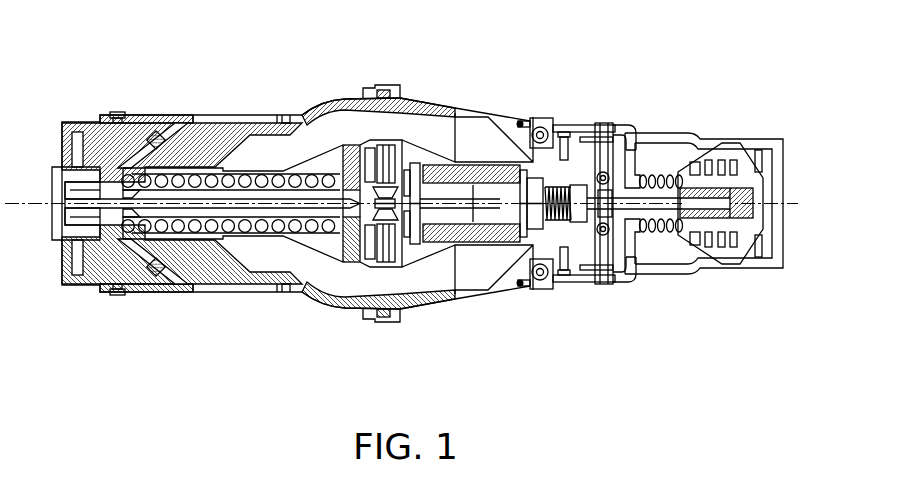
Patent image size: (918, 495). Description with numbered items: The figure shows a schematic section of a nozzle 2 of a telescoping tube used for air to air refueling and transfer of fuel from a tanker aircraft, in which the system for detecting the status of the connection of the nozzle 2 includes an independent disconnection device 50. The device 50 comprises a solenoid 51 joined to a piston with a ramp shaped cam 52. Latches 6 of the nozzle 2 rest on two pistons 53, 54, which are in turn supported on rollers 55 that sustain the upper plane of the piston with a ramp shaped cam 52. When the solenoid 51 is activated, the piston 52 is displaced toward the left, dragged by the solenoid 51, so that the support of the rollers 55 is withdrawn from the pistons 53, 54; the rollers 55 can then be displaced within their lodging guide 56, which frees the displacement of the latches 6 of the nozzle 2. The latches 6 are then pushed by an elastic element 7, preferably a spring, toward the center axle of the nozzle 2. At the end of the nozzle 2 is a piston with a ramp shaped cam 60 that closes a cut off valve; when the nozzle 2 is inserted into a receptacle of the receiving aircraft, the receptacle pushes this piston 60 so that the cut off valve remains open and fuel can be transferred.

The nozzle 2 is at (438, 98).
The latches 6 is at (617, 128).
The elastic element 7 is at (555, 185).
The independent disconnection device 50 is at (507, 250).
The solenoid 51 is at (470, 240).
The piston with a ramp shaped cam 52 is at (594, 200).
The piston 53 is at (600, 176).
The piston 54 is at (604, 255).
The rollers 55 is at (634, 131).
The lodging guide 56 is at (613, 250).
The piston with a ramp shaped cam 60 is at (748, 232).